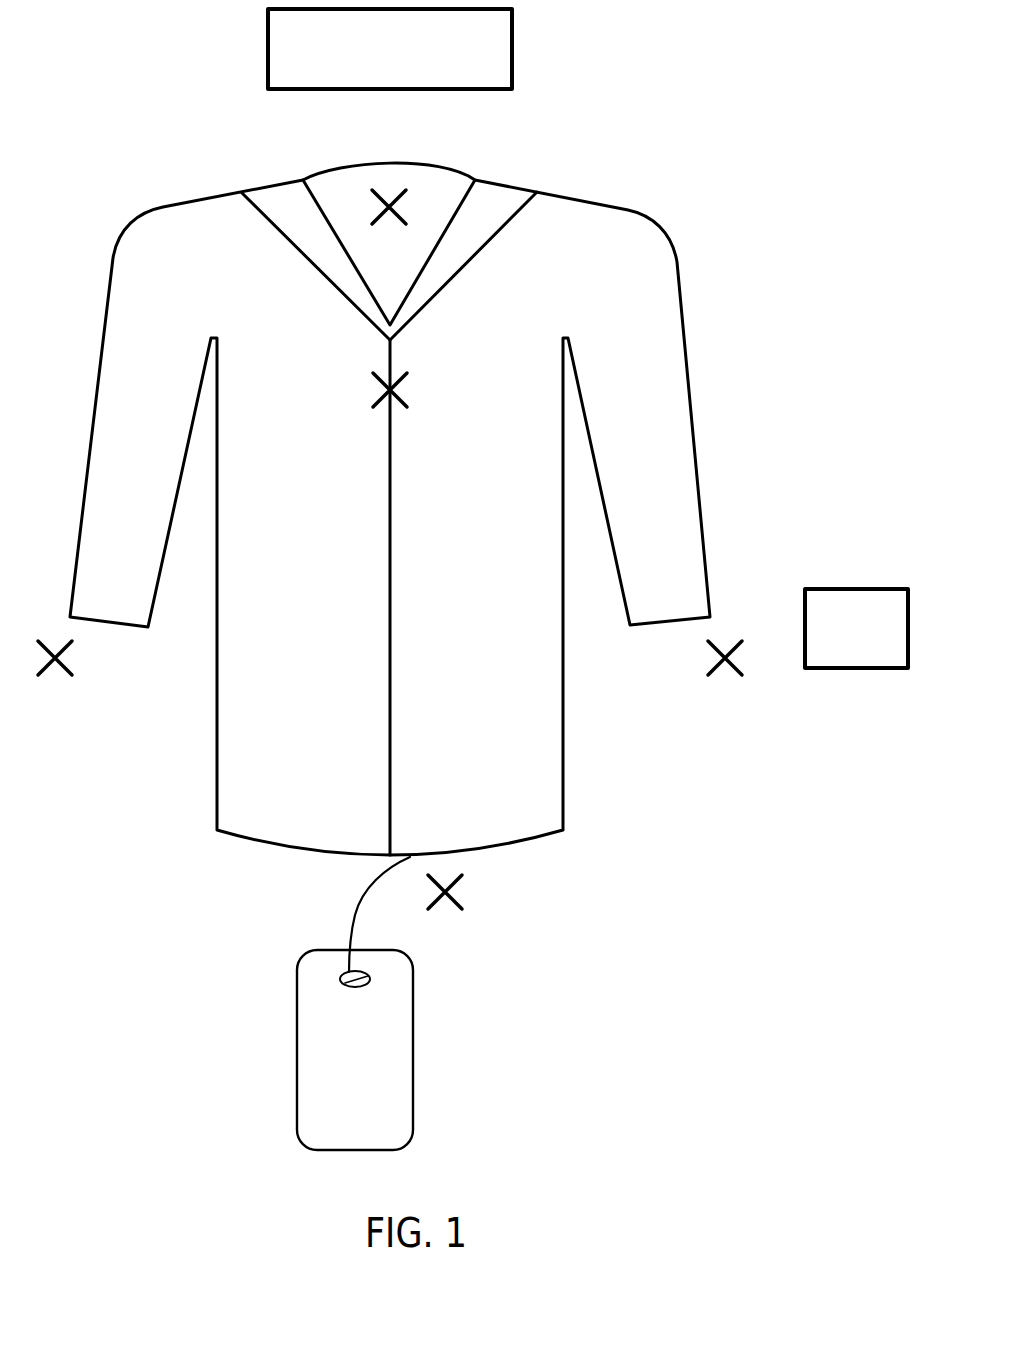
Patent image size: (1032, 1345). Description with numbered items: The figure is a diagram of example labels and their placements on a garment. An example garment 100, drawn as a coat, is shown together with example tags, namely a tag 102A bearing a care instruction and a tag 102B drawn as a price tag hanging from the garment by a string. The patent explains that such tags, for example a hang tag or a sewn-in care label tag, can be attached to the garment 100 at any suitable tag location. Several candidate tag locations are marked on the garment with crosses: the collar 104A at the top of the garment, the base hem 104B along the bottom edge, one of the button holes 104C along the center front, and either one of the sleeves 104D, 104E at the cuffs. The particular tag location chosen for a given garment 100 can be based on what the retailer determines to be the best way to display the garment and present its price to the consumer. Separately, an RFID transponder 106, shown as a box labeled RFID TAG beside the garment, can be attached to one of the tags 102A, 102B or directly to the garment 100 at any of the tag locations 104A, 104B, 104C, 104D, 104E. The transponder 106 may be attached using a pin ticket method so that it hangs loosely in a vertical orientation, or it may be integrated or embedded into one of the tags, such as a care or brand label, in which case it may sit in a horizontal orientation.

The garment 100 is at (628, 210).
The hang tag 102A is at (514, 50).
The tag 102B is at (413, 1055).
The collar 104A is at (356, 182).
The base hem 104B is at (467, 864).
The button hole 104C is at (368, 421).
The sleeve 104D is at (103, 637).
The sleeve 104E is at (675, 637).
The RFID transponder 106 is at (855, 587).